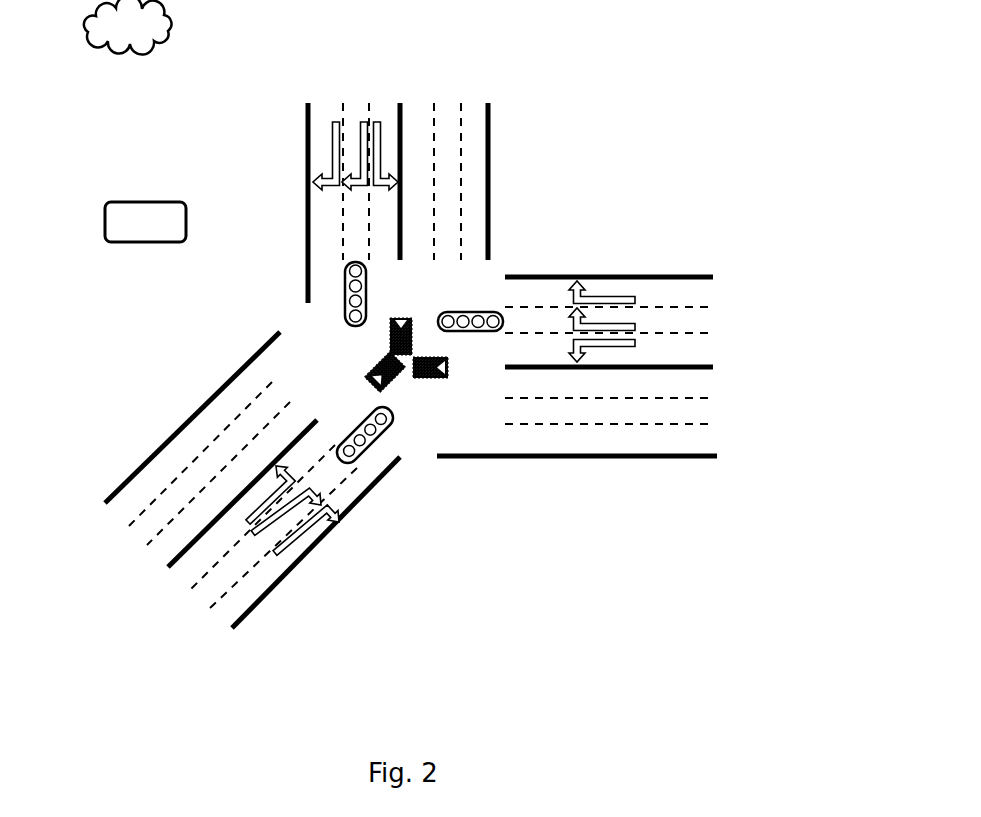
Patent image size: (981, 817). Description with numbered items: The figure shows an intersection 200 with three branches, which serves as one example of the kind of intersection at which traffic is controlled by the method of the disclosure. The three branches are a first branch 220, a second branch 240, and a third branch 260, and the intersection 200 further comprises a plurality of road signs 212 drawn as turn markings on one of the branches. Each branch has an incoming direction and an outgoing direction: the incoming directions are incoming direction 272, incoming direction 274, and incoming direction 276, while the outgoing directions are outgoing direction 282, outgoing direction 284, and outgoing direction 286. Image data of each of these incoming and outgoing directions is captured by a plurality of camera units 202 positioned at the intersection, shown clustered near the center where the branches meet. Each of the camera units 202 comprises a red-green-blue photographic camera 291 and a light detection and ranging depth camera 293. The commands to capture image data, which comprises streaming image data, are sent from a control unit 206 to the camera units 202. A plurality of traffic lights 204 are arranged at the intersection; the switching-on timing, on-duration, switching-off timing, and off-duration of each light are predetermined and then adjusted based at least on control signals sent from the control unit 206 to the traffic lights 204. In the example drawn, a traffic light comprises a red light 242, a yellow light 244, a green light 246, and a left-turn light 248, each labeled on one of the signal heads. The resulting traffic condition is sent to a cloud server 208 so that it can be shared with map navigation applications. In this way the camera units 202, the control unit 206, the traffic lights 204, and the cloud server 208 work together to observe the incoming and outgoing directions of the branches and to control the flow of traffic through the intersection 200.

The intersection 200 is at (723, 133).
The camera units 202 is at (378, 352).
The traffic lights 204 is at (472, 302).
The control unit 206 is at (118, 233).
The cloud server 208 is at (150, 38).
The road signs 212 is at (310, 528).
The first branch 220 is at (621, 331).
The second branch 240 is at (341, 169).
The red light 242 is at (387, 420).
The yellow light 244 is at (376, 431).
The green light 246 is at (365, 443).
The left-turn light 248 is at (354, 455).
The third branch 260 is at (217, 482).
The incoming direction 272 is at (710, 323).
The incoming direction 274 is at (360, 98).
The incoming direction 276 is at (188, 607).
The outgoing direction 282 is at (715, 413).
The outgoing direction 284 is at (448, 97).
The outgoing direction 286 is at (128, 543).
The red-green-blue (RGB) photographic camera 291 is at (455, 372).
The light detection and ranging (LiDAR) depth camera 293 is at (435, 378).